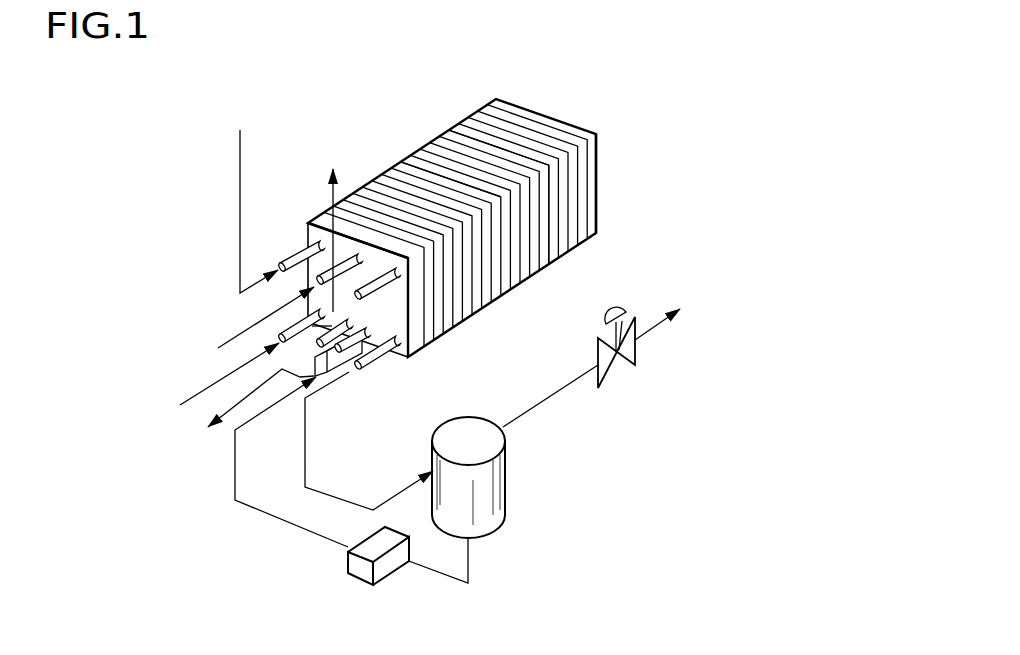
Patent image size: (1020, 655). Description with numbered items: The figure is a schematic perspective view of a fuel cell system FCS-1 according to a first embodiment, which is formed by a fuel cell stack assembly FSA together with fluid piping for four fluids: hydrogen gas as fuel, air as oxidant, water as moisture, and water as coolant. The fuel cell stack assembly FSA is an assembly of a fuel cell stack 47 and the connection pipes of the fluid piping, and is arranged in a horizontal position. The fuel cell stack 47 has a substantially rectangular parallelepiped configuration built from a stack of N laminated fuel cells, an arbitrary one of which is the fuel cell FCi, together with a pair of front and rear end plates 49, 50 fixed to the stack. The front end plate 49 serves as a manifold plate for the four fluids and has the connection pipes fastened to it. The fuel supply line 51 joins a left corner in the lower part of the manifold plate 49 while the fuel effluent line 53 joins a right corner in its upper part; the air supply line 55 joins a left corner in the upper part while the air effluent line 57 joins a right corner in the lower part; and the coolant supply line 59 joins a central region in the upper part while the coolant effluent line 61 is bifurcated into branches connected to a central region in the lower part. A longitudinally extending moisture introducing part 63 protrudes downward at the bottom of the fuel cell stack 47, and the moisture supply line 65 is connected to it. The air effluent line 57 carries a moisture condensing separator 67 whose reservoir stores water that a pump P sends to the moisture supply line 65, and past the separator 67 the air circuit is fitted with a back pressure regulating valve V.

The fuel cell system FCS-1 is at (718, 159).
The fuel cell stack assembly FSA is at (493, 194).
The fuel cell FCi is at (400, 157).
The rear end plate 50 is at (598, 175).
The fuel cell stack 47 is at (515, 298).
The front end plate 49 is at (413, 356).
The air supply line 55 is at (240, 181).
The fuel effluent line 53 is at (332, 191).
The coolant supply line 59 is at (228, 340).
The fuel supply line 51 is at (196, 395).
The coolant effluent line 61 is at (237, 410).
The moisture introducing part 63 is at (350, 373).
The air effluent line 57 is at (345, 499).
The moisture supply line 65 is at (300, 527).
The moisture condensing separator 67 is at (506, 480).
The pump P is at (358, 576).
The back pressure regulating valve V is at (634, 316).